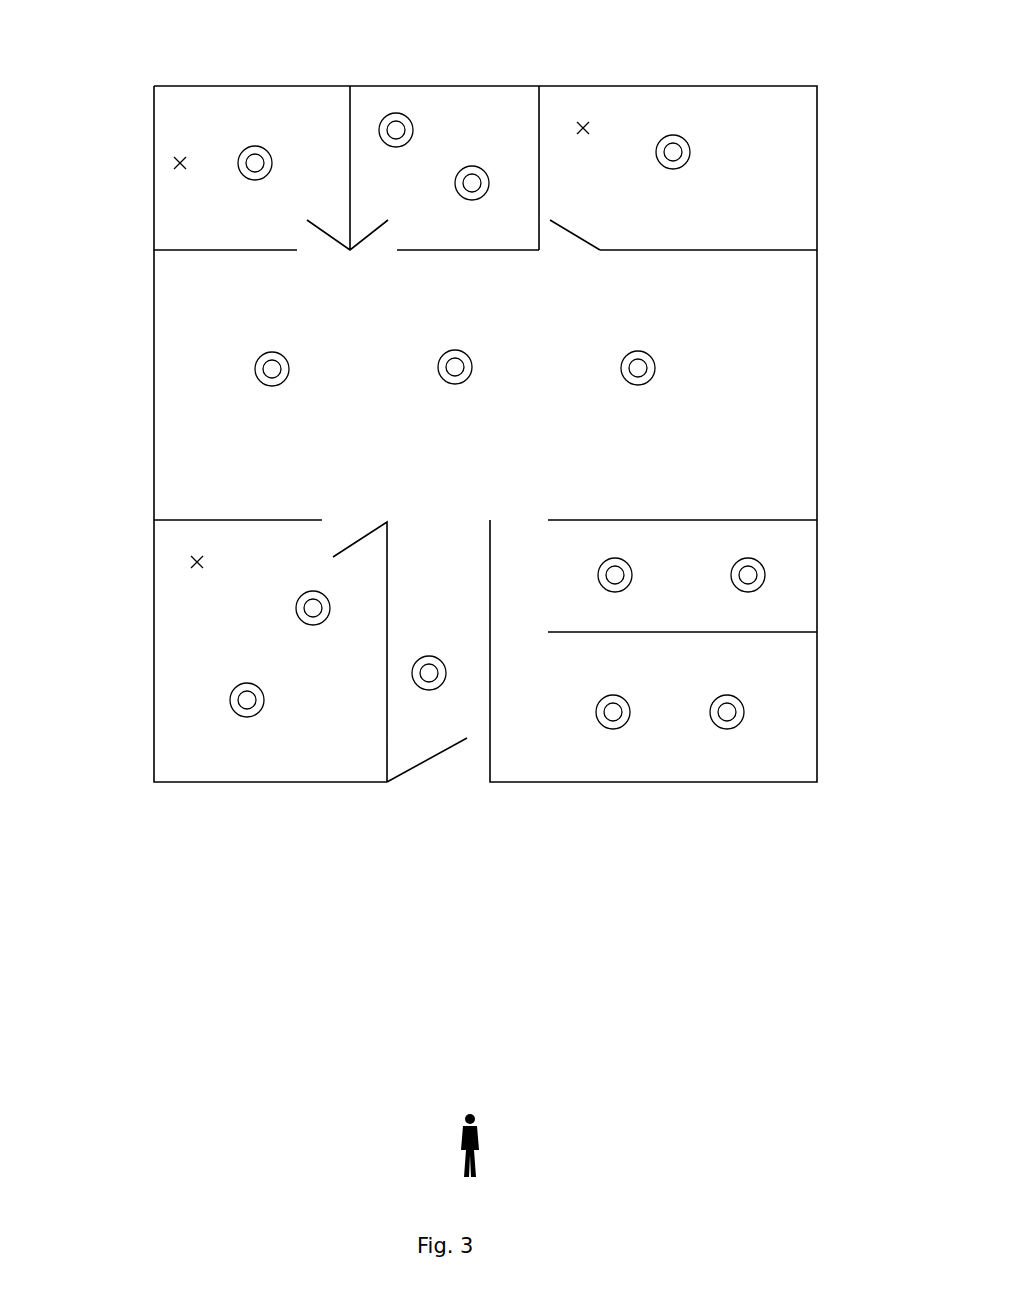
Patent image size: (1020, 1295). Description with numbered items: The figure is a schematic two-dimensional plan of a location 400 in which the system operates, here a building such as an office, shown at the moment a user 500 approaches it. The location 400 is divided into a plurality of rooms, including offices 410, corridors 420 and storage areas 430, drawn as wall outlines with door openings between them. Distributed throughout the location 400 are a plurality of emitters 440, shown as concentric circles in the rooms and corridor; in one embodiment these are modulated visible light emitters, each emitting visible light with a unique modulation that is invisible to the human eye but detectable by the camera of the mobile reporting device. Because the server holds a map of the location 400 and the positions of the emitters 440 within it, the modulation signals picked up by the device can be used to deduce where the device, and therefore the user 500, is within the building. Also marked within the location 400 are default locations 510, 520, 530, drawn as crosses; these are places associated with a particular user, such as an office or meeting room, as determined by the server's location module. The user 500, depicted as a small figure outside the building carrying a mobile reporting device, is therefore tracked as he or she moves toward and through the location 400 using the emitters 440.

The location 400 is at (405, 82).
The offices 410 is at (235, 214).
The corridors 420 is at (452, 622).
The storage areas 430 is at (747, 217).
The emitters 440 is at (255, 145).
The user 500 is at (512, 1148).
The default location 510 is at (177, 557).
The default location 520 is at (162, 165).
The default location 530 is at (583, 105).